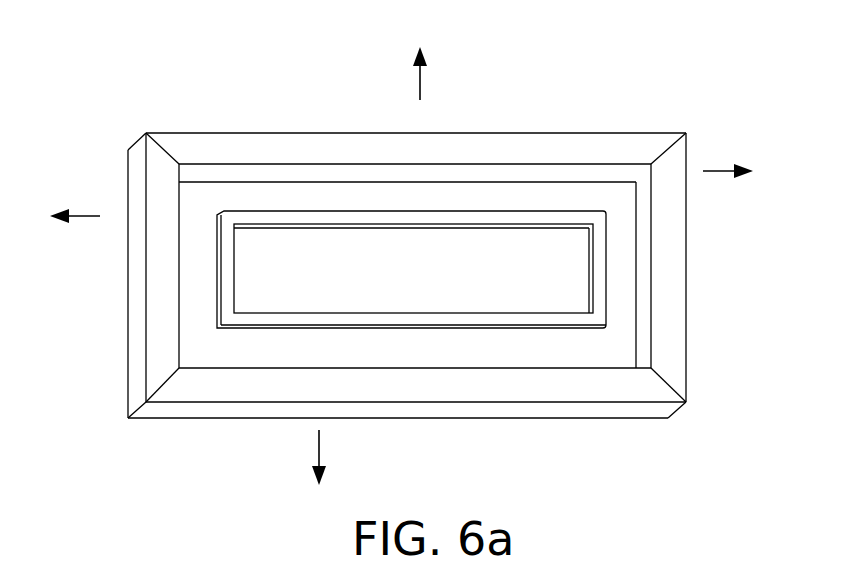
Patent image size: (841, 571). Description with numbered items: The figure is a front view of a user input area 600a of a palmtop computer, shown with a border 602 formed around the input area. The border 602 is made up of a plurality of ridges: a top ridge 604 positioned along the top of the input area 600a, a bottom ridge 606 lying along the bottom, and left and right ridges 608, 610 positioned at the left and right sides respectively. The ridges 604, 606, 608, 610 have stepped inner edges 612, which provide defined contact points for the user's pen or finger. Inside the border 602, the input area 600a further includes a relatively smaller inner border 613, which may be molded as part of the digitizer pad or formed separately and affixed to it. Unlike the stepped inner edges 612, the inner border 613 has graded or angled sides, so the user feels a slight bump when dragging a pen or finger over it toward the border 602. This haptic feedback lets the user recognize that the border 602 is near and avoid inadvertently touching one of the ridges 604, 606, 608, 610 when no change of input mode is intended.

The user input area 600a is at (645, 104).
The border 602 is at (667, 383).
The top ridge 604 is at (512, 148).
The bottom ridge 606 is at (520, 392).
The left ridge 608 is at (153, 353).
The right ridge 610 is at (673, 330).
The stepped inner edges 612 is at (278, 175).
The inner border 613 is at (222, 250).